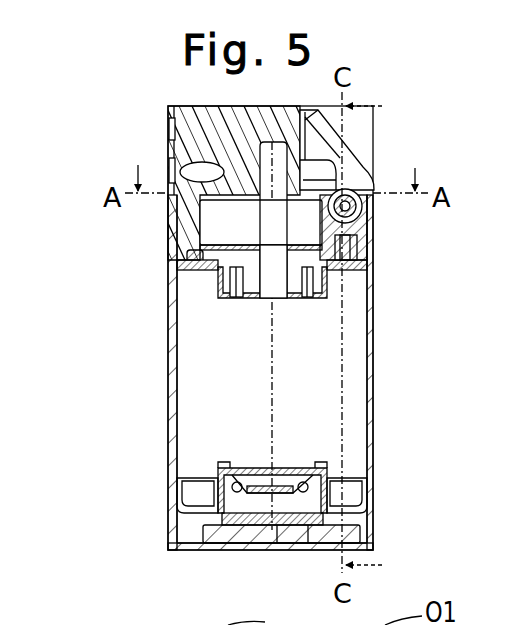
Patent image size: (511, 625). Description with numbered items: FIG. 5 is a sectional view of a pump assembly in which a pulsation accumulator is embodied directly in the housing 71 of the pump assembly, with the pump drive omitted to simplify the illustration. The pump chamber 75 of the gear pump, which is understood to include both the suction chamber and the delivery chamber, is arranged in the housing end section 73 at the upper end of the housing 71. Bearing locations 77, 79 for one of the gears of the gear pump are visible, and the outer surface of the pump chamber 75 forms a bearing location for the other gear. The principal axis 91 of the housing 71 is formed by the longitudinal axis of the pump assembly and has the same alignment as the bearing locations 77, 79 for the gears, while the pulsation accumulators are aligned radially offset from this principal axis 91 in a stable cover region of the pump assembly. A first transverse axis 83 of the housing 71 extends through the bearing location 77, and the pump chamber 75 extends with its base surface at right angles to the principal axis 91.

The housing 71 is at (172, 377).
The housing end section 73 is at (212, 143).
The pump chamber 75 is at (228, 227).
The bearing location 77 is at (302, 160).
The bearing location 79 is at (280, 290).
The principal axis 91 is at (272, 417).
The first transverse axis 83 is at (228, 624).